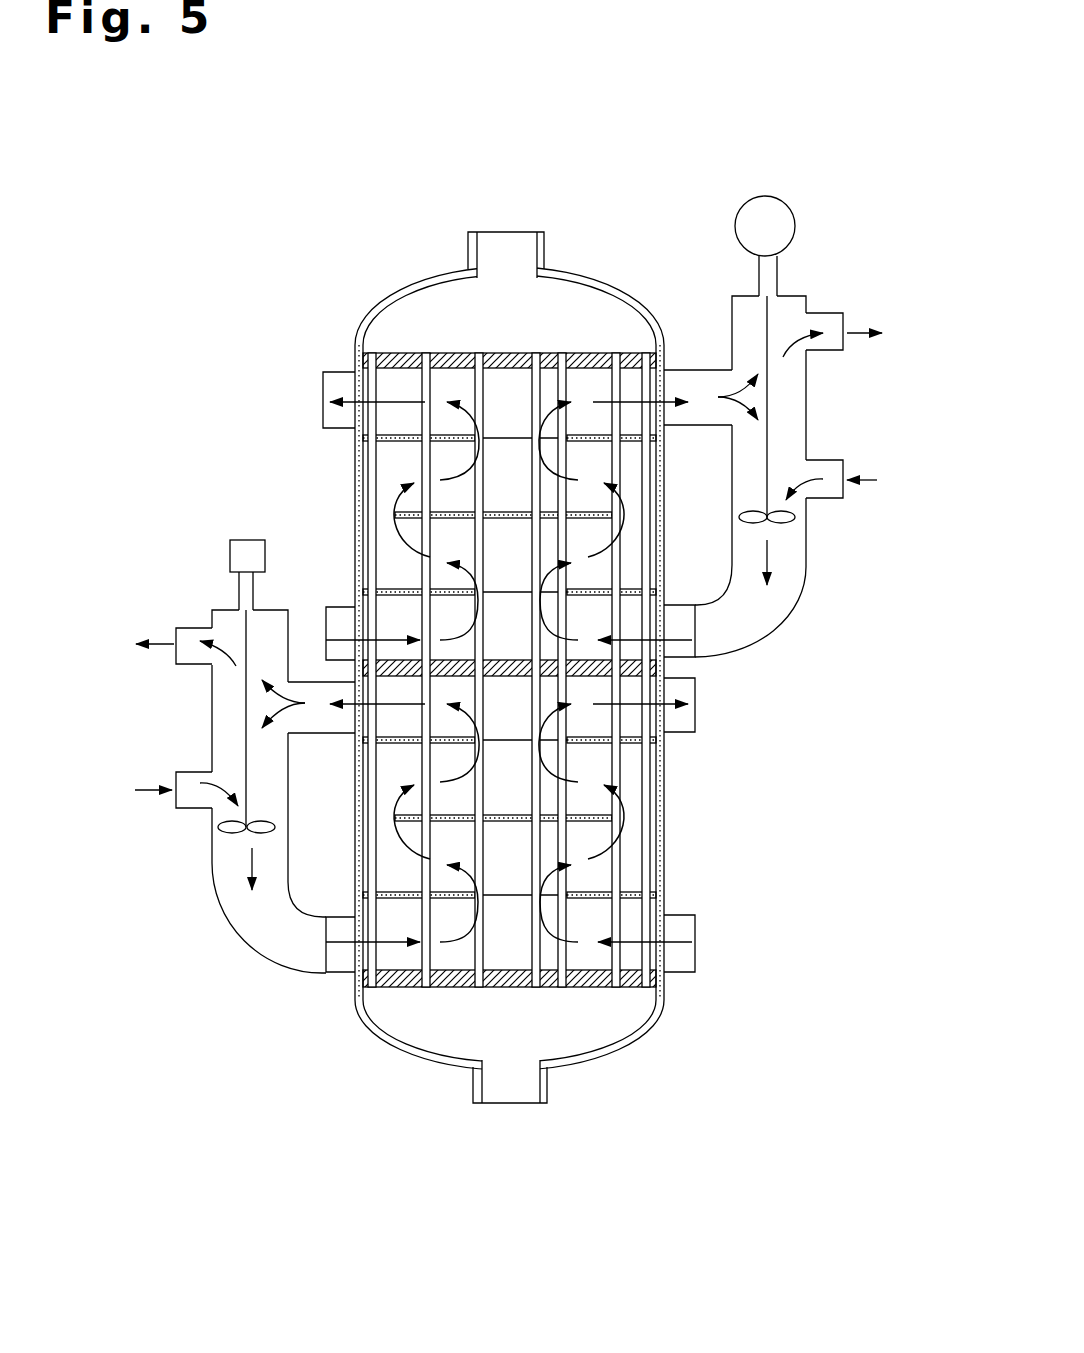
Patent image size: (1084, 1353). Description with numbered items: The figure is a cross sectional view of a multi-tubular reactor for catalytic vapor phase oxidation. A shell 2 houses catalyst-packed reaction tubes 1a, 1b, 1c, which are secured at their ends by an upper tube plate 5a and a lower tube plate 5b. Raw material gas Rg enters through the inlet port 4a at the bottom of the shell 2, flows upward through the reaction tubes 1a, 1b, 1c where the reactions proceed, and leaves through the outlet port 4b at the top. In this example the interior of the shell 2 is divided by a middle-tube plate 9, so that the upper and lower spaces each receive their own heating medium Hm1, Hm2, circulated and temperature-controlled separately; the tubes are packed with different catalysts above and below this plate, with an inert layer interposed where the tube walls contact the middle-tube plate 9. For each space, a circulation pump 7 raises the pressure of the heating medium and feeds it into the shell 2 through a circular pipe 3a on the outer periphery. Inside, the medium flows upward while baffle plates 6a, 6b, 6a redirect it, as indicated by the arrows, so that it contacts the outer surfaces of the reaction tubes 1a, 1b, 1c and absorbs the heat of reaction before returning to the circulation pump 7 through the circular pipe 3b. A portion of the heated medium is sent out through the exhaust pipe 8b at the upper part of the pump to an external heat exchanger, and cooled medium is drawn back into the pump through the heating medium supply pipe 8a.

The reaction tube 1a is at (487, 656).
The reaction tube 1b is at (433, 656).
The reaction tube 1c is at (380, 656).
The shell 2 is at (511, 668).
The circular pipe 3a is at (506, 557).
The circular pipe 3b is at (520, 793).
The inlet port 4a is at (498, 1260).
The outlet port 4b is at (508, 120).
The upper tube plate 5a is at (509, 347).
The lower tube plate 5b is at (509, 994).
The baffle plate 6a is at (509, 653).
The baffle plate 6b is at (503, 651).
The circulation pump 7 is at (778, 525).
The heating medium supply pipe 8a is at (505, 634).
The exhaust pipe 8b is at (509, 489).
The middle-tube plate 9 is at (509, 655).
The heating medium Hm1 is at (247, 857).
The heating medium Hm2 is at (770, 557).
The raw material gas Rg is at (500, 1235).